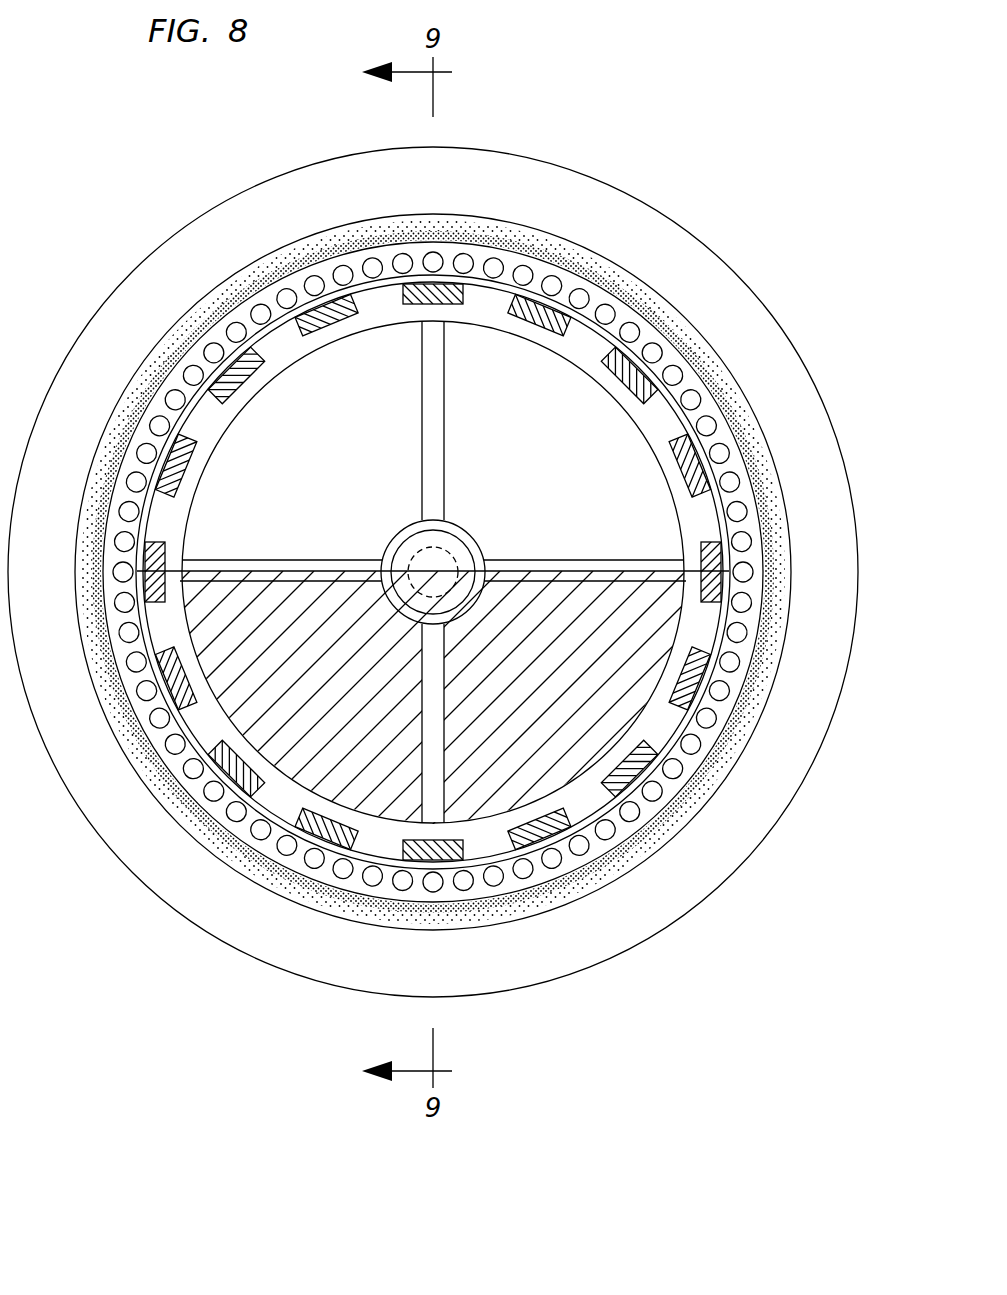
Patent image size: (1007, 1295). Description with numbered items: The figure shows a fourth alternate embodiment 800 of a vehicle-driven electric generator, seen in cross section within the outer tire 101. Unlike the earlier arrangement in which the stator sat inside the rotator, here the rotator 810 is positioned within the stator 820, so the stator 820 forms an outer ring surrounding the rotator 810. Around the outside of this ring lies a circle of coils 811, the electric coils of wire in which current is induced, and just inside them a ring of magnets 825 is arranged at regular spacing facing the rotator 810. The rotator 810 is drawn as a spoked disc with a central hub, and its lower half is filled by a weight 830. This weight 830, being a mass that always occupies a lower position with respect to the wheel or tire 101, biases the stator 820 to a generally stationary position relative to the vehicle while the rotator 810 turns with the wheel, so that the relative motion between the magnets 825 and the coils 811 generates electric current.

The alternate embodiment 800 is at (254, 160).
The tire 101 is at (514, 165).
The coils 811 is at (652, 351).
The stator 820 is at (745, 461).
The magnets 825 is at (613, 367).
The rotator 810 is at (636, 449).
The weight 830 is at (335, 610).